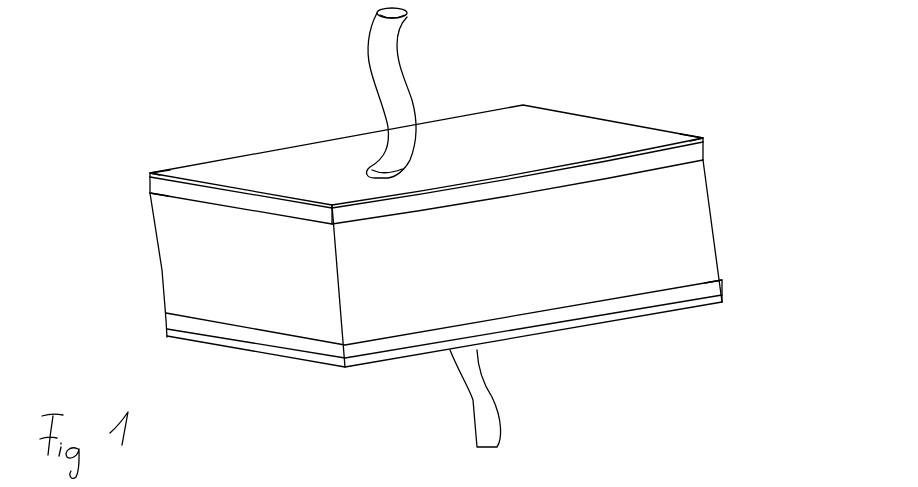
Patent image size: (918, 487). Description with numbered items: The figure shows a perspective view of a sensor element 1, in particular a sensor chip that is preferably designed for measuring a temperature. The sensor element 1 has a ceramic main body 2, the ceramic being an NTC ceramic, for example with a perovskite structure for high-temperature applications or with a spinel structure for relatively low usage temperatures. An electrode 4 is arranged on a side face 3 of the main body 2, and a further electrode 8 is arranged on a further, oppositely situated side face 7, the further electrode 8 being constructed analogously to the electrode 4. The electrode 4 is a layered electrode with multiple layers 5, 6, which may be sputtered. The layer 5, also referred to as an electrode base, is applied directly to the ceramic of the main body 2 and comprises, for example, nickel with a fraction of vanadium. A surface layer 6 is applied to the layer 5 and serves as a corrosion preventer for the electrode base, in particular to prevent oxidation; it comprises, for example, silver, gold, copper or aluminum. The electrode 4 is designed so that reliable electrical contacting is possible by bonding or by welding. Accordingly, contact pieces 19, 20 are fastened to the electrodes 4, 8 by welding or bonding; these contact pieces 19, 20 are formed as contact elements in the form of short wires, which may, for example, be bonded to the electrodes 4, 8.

The sensor element 1 is at (200, 97).
The ceramic main body 2 is at (687, 218).
The side face 3 is at (606, 172).
The electrode 4 is at (722, 140).
The layer 5 is at (168, 192).
The surface layer 6 is at (150, 162).
The further side face 7 is at (593, 302).
The further electrode 8 is at (733, 302).
The contact piece 19 is at (406, 80).
The contact piece 20 is at (492, 402).